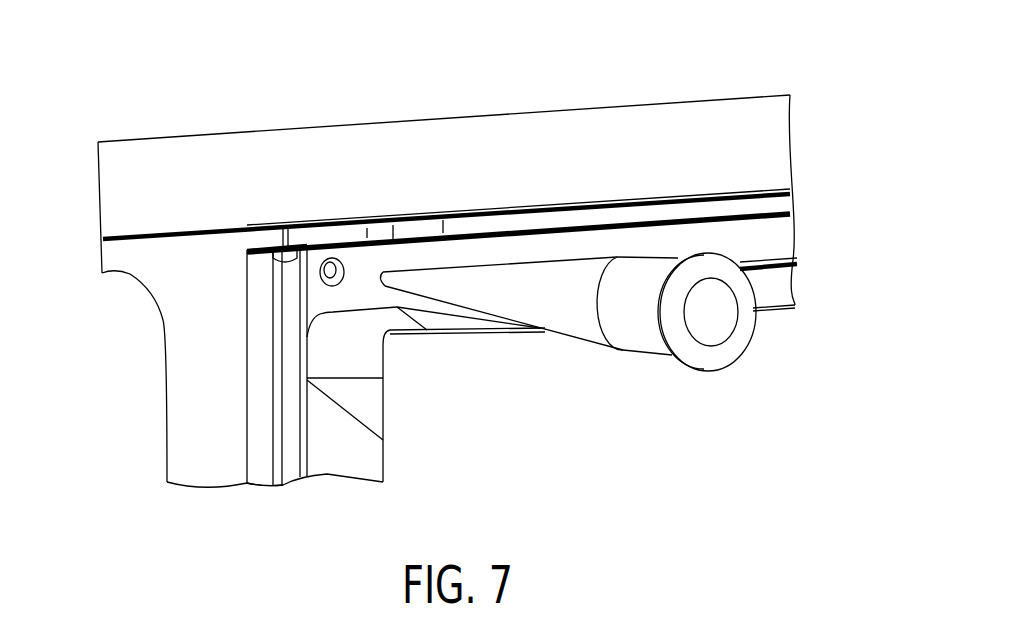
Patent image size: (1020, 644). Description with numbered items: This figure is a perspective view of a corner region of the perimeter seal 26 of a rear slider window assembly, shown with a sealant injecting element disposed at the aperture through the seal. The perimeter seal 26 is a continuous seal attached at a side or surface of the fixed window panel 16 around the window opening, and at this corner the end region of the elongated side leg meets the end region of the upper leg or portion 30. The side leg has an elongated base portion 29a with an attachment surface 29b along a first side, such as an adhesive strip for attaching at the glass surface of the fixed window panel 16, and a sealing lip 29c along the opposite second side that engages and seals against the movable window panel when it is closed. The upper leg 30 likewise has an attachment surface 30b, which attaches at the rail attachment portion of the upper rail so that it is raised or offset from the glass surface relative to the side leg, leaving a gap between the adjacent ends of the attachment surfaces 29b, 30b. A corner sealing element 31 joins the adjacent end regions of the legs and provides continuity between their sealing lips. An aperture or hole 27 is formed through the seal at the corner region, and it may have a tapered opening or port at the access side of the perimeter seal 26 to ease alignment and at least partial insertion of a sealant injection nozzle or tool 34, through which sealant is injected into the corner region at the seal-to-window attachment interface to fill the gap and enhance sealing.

The fixed window panel 16 is at (132, 273).
The perimeter seal 26 is at (688, 160).
The aperture or hole 27 is at (332, 265).
The base portion 29a is at (253, 295).
The attachment surface 29b is at (272, 227).
The sealing lip 29c is at (293, 468).
The upper leg or portion 30 is at (543, 240).
The attachment surface 30b is at (395, 240).
The corner sealing element 31 is at (373, 353).
The sealant injection nozzle or tool 34 is at (640, 337).